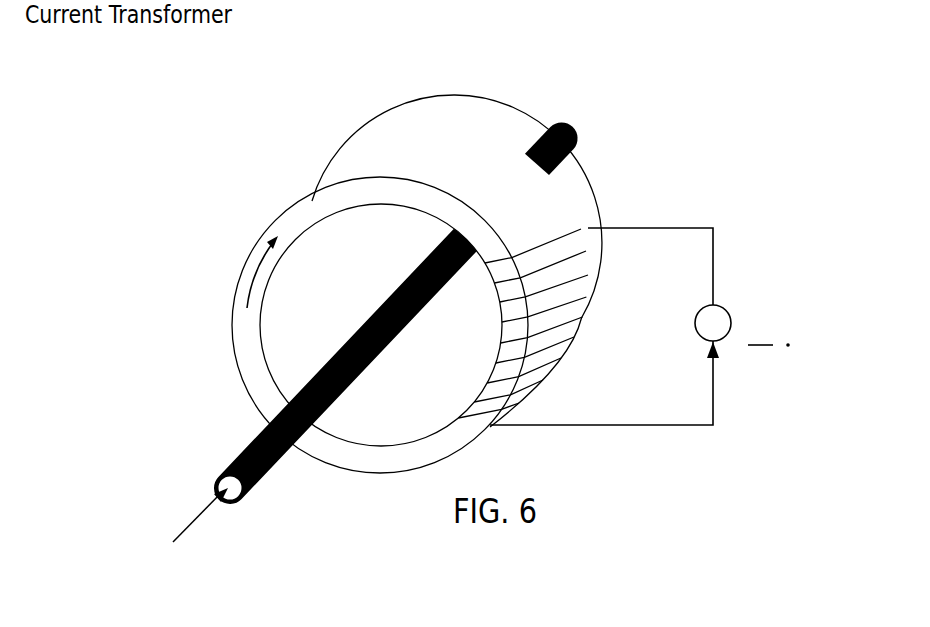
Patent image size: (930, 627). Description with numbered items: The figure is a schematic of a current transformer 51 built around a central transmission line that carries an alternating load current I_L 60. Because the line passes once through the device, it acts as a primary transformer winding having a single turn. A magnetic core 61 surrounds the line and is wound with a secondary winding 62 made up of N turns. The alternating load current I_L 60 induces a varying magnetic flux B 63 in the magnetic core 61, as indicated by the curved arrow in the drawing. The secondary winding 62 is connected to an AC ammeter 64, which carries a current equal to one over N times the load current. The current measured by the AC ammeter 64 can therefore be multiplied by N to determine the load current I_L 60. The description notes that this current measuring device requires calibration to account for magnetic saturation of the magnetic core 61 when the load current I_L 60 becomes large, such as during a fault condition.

The current transformer 51 is at (209, 111).
The load current I_L 60 is at (228, 553).
The magnetic core 61 is at (247, 357).
The secondary winding 62 is at (573, 303).
The magnetic flux B 63 is at (213, 238).
The AC ammeter 64 is at (723, 310).